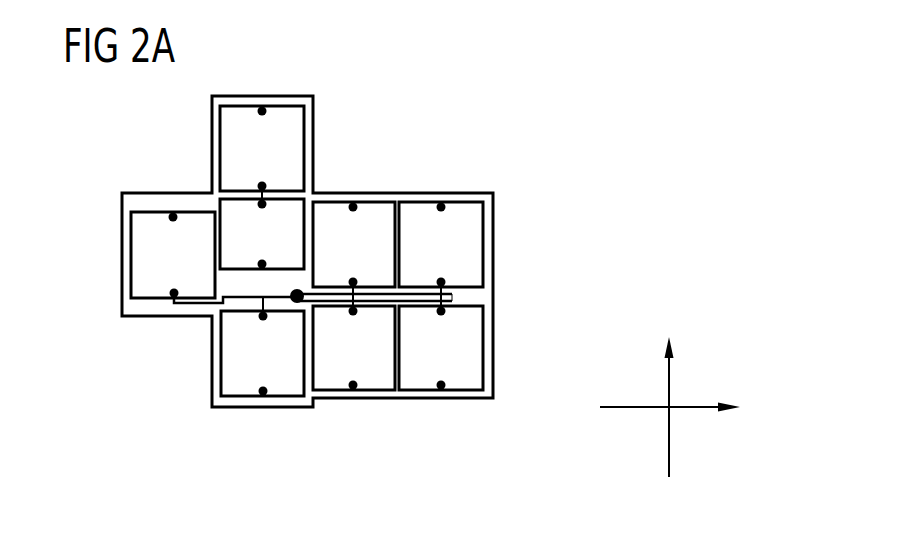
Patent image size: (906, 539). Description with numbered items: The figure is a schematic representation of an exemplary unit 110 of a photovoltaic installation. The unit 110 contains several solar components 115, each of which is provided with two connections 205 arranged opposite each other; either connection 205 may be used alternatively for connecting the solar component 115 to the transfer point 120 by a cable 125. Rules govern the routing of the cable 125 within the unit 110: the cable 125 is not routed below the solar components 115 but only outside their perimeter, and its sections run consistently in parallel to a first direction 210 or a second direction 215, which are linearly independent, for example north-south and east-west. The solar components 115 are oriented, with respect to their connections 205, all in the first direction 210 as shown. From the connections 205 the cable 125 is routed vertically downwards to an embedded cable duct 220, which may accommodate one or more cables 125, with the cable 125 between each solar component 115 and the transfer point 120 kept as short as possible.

The unit 110 is at (504, 118).
The solar component 115 is at (417, 210).
The transfer point 120 is at (305, 290).
The cable 125 is at (193, 305).
The connection 205 is at (173, 213).
The first direction 210 is at (663, 347).
The second direction 215 is at (725, 412).
The cable duct 220 is at (476, 296).